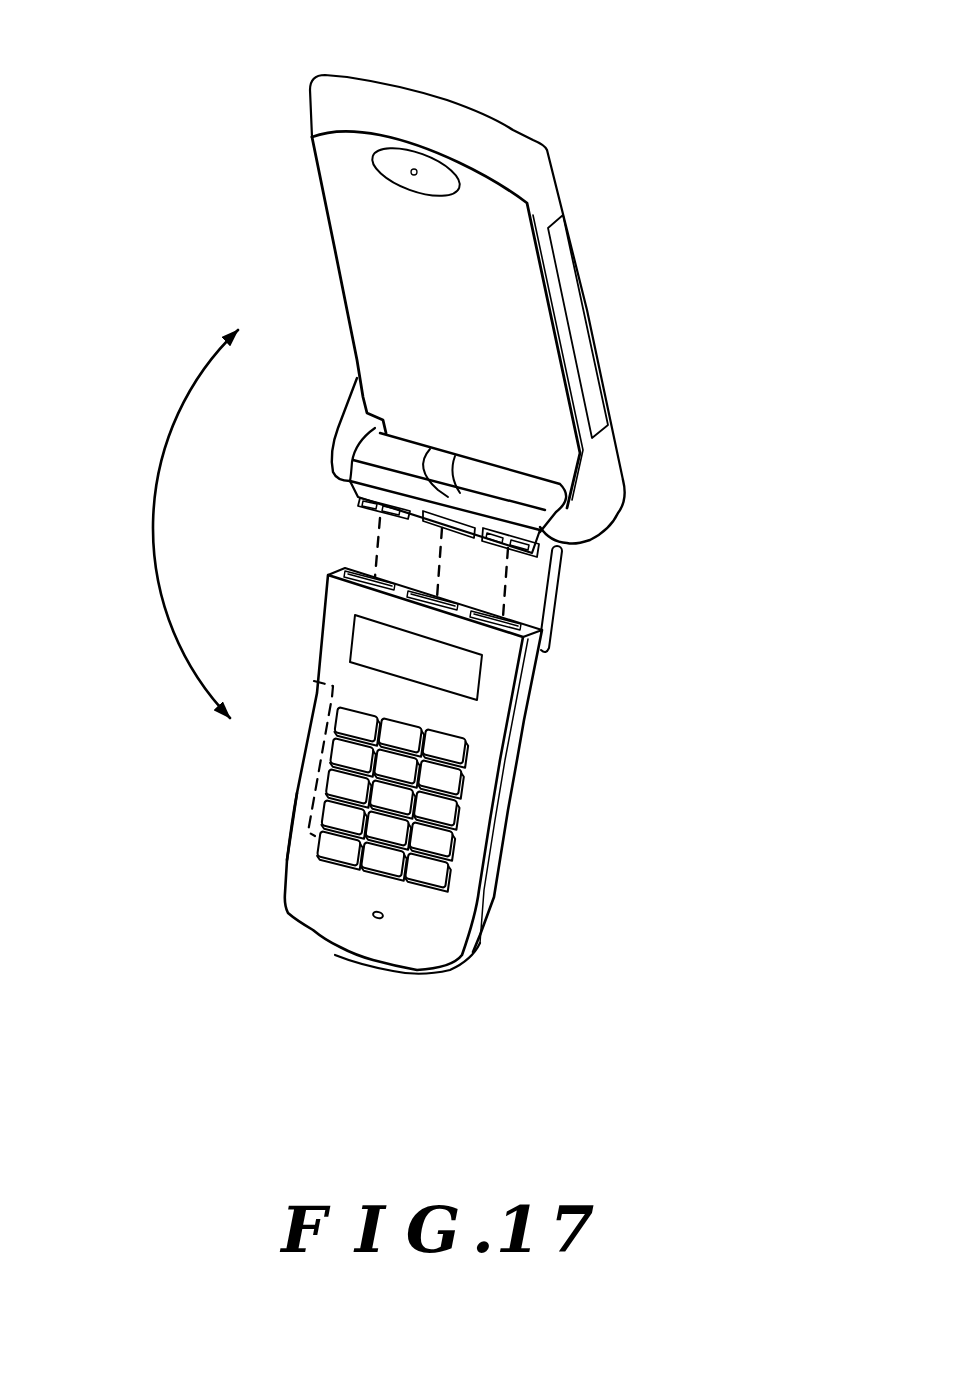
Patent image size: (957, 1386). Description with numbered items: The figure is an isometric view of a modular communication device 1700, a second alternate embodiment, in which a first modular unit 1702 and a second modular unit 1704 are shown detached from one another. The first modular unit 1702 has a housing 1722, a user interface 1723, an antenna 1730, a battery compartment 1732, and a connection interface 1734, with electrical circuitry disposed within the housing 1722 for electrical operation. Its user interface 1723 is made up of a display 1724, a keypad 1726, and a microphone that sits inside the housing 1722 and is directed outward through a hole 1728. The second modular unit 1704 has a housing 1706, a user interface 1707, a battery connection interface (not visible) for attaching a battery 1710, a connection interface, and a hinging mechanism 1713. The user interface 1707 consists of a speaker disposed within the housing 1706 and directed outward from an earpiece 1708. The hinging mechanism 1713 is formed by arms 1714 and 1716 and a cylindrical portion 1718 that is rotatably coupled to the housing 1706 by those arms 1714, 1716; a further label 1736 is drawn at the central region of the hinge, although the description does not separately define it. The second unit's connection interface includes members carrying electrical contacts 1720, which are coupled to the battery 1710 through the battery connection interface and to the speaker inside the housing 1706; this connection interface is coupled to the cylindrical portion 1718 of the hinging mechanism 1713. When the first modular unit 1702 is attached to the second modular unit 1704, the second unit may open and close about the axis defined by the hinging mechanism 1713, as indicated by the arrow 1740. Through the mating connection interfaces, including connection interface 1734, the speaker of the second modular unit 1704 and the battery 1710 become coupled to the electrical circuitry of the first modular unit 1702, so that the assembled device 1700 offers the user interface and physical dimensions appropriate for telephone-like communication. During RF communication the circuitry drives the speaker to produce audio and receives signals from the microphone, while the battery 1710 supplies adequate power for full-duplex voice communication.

The modular communication device 1700 is at (853, 401).
The first modular unit 1702 is at (503, 877).
The second modular unit 1704 is at (548, 150).
The housing 1706 is at (348, 224).
The user interface 1707 is at (283, 120).
The earpiece 1708 is at (412, 170).
The battery 1710 is at (572, 283).
The hinging mechanism 1713 is at (520, 497).
The arm 1714 is at (341, 450).
The arm 1716 is at (577, 518).
The cylindrical portion 1718 is at (488, 477).
The electrical contacts 1720 is at (357, 510).
The housing 1722 is at (443, 940).
The user interface 1723 is at (272, 882).
The display 1724 is at (473, 676).
The keypad 1726 is at (467, 797).
The hole 1728 is at (378, 920).
The antenna 1730 is at (555, 596).
The battery compartment 1732 is at (298, 825).
The connection interface 1734 is at (337, 562).
The center hinge knuckle 1736 is at (413, 570).
The arrow 1740 is at (165, 618).